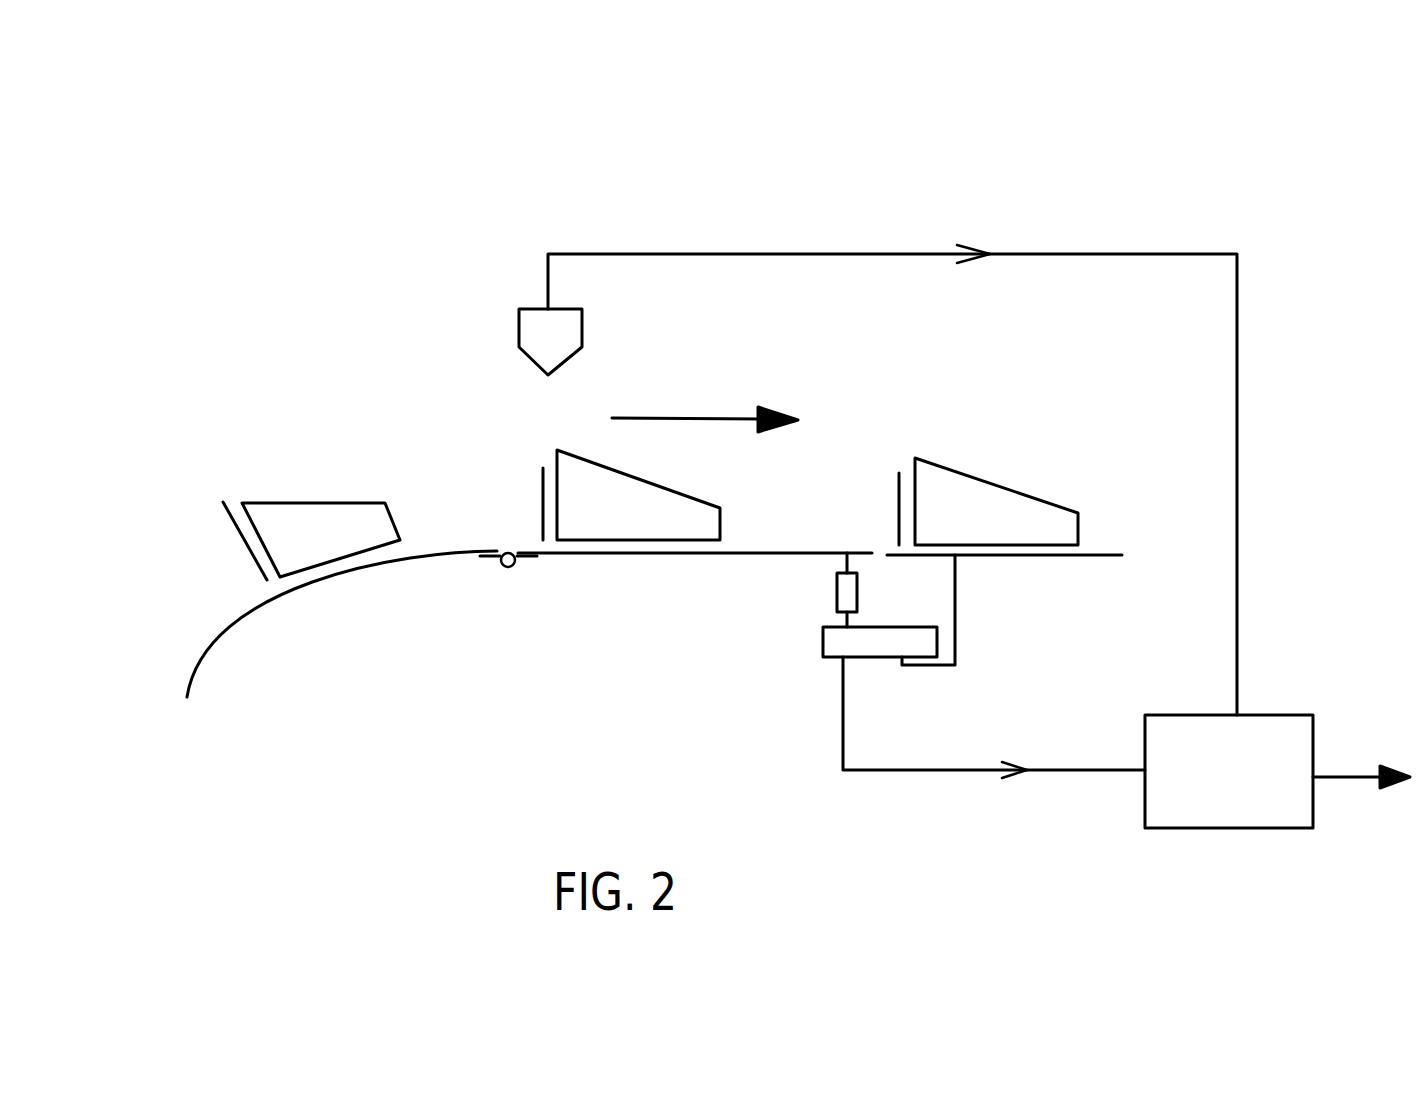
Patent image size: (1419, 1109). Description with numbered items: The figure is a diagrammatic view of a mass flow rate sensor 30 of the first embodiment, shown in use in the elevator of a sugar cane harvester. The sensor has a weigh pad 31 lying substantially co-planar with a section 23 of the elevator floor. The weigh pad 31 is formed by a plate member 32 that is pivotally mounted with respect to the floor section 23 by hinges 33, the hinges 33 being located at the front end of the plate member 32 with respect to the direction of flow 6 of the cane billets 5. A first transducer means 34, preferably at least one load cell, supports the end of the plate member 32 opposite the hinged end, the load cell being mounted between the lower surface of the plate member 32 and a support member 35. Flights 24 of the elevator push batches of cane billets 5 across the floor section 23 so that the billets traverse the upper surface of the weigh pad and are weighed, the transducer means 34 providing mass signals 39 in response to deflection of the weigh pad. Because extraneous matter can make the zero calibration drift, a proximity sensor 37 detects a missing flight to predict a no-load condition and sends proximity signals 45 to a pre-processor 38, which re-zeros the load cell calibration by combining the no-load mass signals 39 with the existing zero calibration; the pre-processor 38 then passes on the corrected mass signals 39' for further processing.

The cane billets 5 is at (321, 551).
The direction of flow 6 is at (712, 417).
The floor section 23 is at (197, 637).
The flights 24 is at (243, 543).
The mass flow rate sensor 30 is at (560, 712).
The weigh pad 31 is at (608, 553).
The plate member 32 is at (785, 550).
The hinges 33 is at (500, 566).
The first transducer means 34 is at (822, 637).
The support member 35 is at (958, 602).
The proximity sensor 37 is at (552, 343).
The pre-processor 38 is at (1242, 799).
The mass signals 39 is at (994, 769).
The output signal line 39' is at (1361, 834).
The proximity signals 45 is at (757, 253).